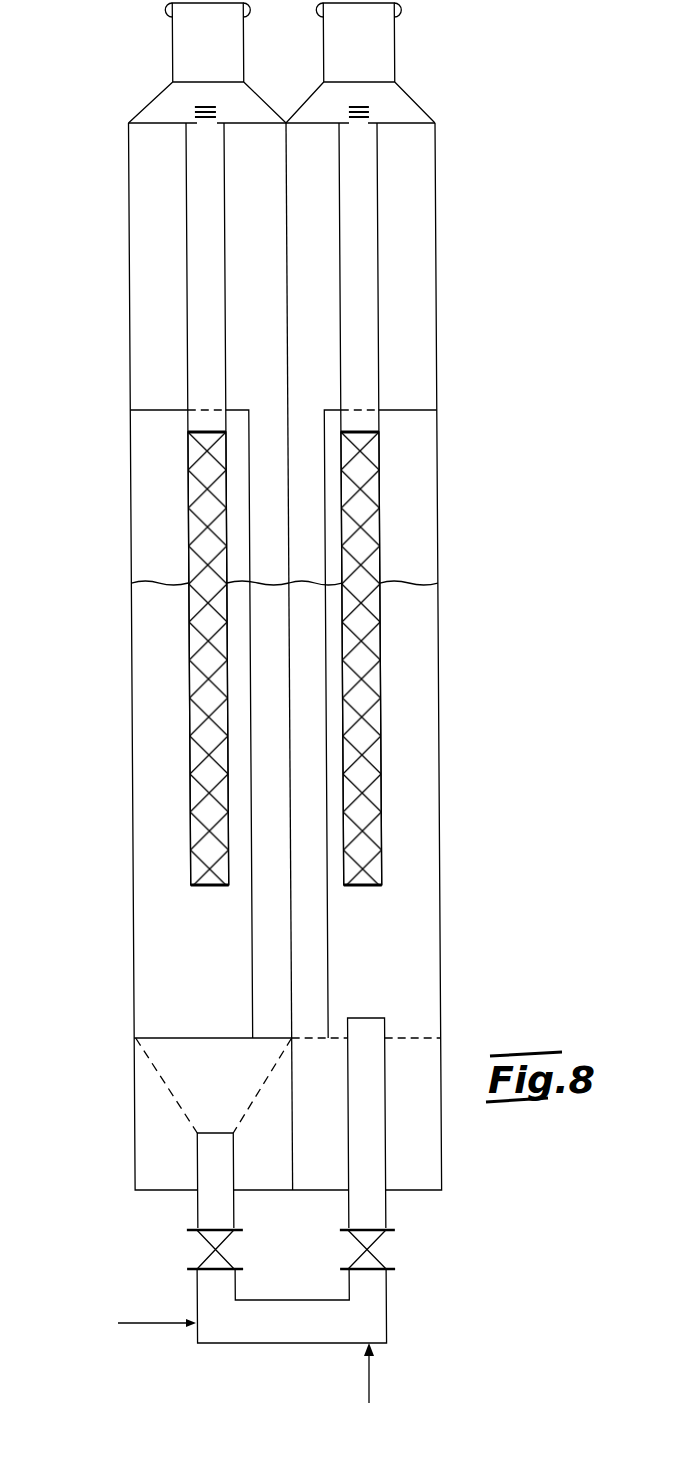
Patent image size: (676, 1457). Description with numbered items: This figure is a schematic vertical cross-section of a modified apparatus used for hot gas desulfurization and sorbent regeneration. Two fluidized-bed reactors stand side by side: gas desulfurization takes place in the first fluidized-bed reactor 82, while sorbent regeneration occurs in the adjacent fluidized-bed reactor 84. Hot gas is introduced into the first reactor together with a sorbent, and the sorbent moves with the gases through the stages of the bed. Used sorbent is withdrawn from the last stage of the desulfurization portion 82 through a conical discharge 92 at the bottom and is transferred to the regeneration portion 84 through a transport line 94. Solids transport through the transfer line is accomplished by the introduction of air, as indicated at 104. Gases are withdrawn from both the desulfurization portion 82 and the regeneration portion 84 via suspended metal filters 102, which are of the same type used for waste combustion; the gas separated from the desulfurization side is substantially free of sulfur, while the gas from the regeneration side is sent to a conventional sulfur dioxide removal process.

The first fluidized-bed reactor 82 is at (158, 704).
The adjacent fluidized-bed reactor 84 is at (408, 711).
The suspended metal filters 102 is at (390, 335).
The conical discharge 92 is at (182, 1103).
The transport line 94 is at (285, 1300).
The air introduction 104 is at (137, 1325).